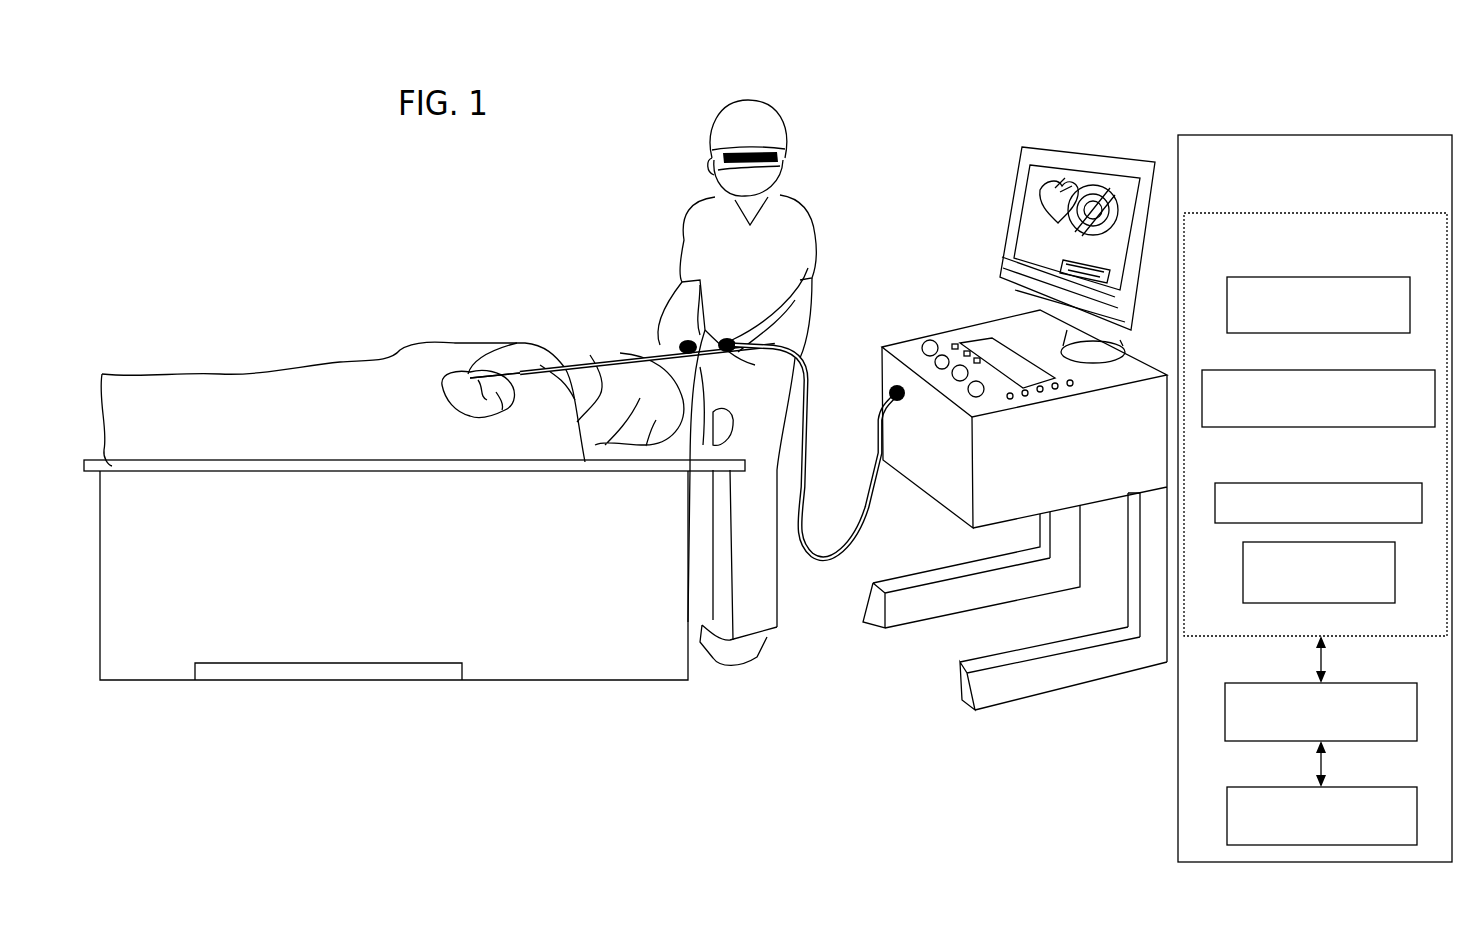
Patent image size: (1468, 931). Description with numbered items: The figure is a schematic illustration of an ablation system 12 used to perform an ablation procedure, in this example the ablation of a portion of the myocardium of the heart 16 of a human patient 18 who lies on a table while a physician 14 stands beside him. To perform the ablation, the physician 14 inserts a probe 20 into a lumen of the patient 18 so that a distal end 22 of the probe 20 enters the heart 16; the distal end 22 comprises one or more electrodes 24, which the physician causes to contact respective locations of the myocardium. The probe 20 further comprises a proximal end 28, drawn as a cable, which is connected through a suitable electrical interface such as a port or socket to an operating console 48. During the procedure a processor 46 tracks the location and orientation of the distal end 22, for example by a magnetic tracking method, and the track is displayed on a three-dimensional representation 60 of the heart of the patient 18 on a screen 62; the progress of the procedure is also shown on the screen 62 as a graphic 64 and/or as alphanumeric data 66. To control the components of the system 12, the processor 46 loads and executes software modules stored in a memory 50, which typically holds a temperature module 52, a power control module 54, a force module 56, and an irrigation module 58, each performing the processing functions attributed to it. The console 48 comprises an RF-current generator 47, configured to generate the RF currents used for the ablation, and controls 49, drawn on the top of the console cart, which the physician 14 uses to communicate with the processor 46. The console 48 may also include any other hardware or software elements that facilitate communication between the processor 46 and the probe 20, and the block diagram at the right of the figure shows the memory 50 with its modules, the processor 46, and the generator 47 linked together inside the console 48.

The ablation system 12 is at (897, 143).
The physician 14 is at (745, 104).
The heart 16 is at (473, 373).
The patient 18 is at (650, 472).
The probe 20 is at (577, 357).
The distal end 22 is at (475, 380).
The electrodes 24 is at (475, 380).
The proximal end 28 is at (878, 410).
The processor 46 is at (1225, 712).
The RF-current generator 47 is at (1227, 813).
The operating console 48 is at (967, 330).
The controls 49 is at (932, 342).
The memory 50 is at (1197, 638).
The temperature module 52 is at (1403, 277).
The power control module 54 is at (1315, 427).
The force module 56 is at (1420, 483).
The irrigation module 58 is at (1395, 553).
The three-dimensional representation 60 is at (1038, 173).
The screen 62 is at (1017, 160).
The graphic 64 is at (1097, 187).
The alphanumeric data 66 is at (1023, 258).